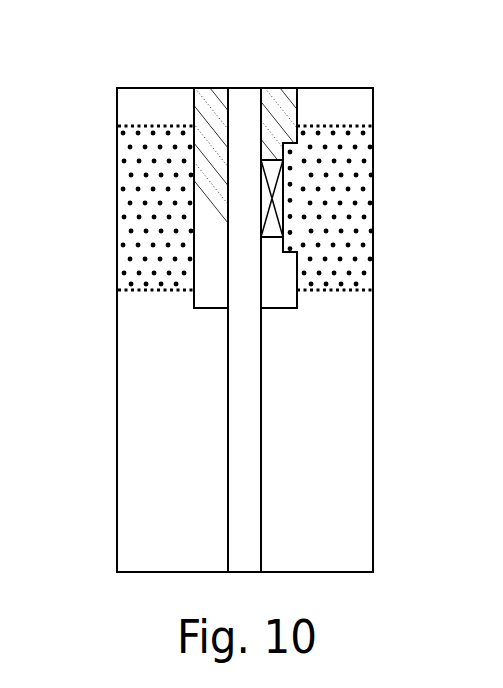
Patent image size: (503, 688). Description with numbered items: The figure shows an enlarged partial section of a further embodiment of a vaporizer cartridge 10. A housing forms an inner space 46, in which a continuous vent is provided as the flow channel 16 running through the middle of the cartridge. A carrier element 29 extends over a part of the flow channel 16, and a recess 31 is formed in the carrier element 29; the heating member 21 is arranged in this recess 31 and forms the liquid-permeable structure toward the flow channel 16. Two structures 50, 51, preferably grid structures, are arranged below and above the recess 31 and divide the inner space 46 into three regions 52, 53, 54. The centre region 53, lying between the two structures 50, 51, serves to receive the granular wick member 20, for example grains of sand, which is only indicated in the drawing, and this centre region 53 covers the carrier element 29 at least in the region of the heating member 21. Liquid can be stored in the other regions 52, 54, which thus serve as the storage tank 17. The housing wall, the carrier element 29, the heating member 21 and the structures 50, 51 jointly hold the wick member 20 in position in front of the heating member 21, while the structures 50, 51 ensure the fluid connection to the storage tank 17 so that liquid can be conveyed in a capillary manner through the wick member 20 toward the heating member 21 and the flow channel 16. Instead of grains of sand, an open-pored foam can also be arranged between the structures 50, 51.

The vaporizer cartridge 10 is at (106, 469).
The flow channel 16 is at (252, 112).
The storage tank 17 is at (190, 516).
The wick member 20 is at (132, 145).
The heating member 21 is at (281, 203).
The carrier element 29 is at (206, 172).
The recess 31 is at (300, 150).
The inner space 46 is at (141, 412).
The structure 50 is at (333, 290).
The structure 51 is at (338, 127).
The region 52 is at (338, 452).
The centre region 53 is at (343, 162).
The region 54 is at (360, 97).